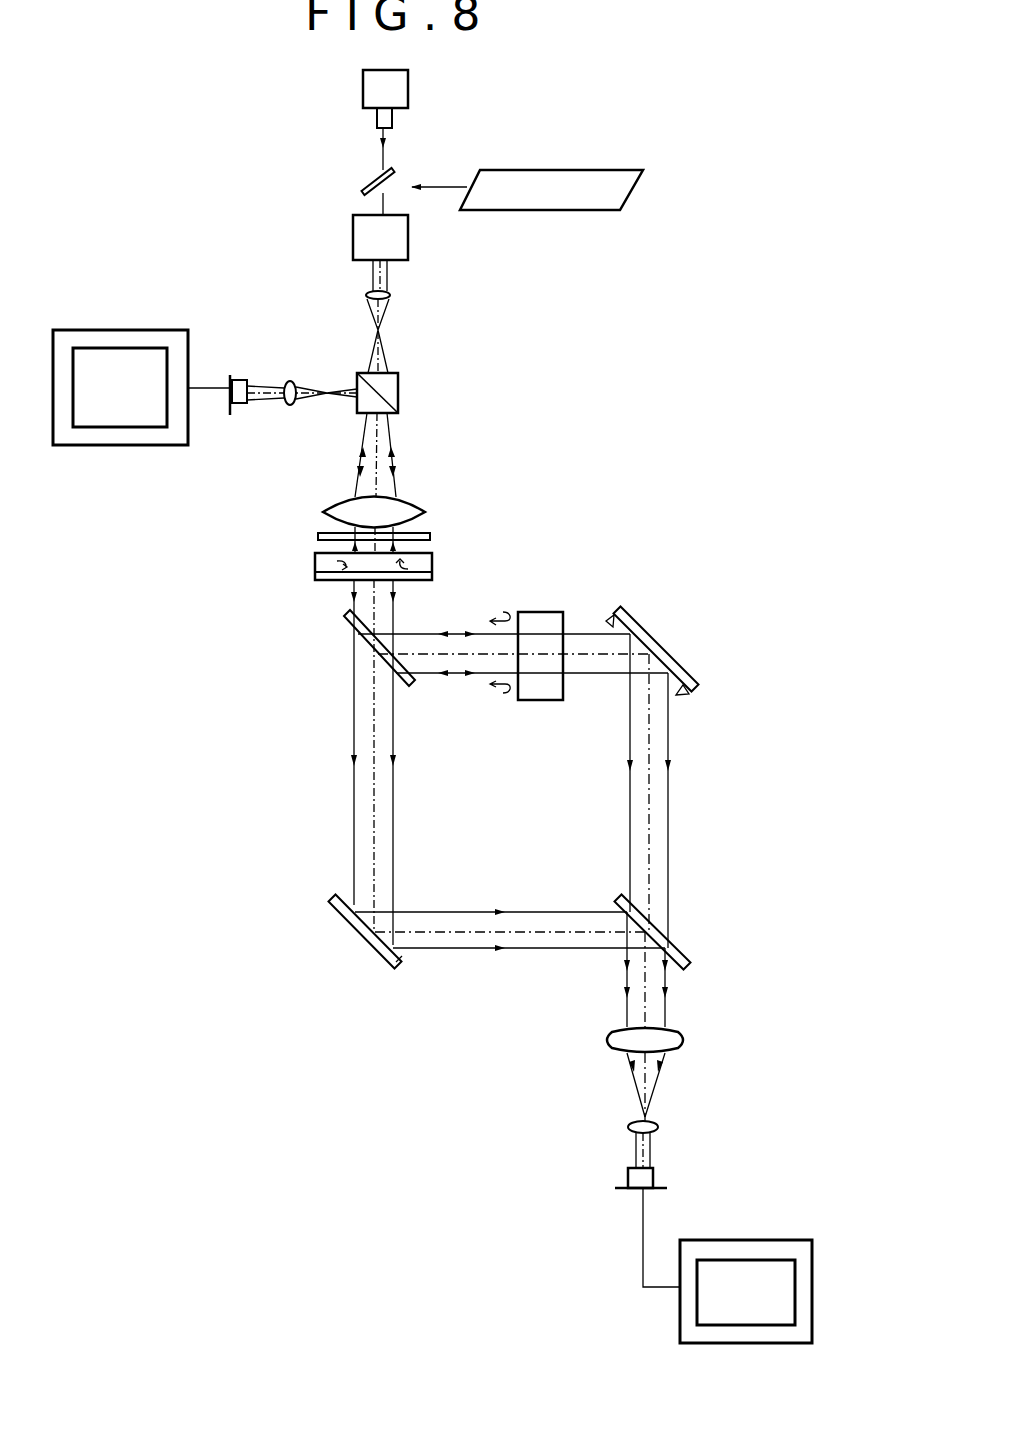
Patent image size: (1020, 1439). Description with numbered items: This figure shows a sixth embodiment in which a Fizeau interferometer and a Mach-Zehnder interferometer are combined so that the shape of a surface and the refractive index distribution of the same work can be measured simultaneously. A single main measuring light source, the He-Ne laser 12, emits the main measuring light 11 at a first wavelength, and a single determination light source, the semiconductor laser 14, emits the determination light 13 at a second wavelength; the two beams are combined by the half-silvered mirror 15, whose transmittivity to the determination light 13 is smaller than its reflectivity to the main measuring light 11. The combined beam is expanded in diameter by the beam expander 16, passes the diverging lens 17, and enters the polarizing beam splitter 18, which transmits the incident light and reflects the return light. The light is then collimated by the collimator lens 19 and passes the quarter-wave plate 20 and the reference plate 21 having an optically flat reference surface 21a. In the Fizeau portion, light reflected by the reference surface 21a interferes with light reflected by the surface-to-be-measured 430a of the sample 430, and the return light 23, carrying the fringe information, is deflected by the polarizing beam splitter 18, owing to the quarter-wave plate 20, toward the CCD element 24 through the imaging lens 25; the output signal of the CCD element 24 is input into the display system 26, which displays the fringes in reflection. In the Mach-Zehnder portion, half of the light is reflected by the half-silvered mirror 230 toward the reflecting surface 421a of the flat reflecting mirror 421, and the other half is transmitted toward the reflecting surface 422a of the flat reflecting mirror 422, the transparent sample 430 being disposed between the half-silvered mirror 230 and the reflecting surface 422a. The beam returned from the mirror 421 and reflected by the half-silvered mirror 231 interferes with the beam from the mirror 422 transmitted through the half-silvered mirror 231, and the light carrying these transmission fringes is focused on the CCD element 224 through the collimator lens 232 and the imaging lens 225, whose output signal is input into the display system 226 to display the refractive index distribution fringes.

The main measuring light 11 is at (440, 185).
The He-Ne laser 12 is at (580, 175).
The determination light 13 is at (382, 157).
The semiconductor laser 14 is at (363, 98).
The half-silvered mirror 15 is at (365, 192).
The beam expander 16 is at (353, 233).
The diverging lens 17 is at (390, 293).
The polarizing beam splitter 18 is at (400, 375).
The collimator lens 19 is at (417, 507).
The quarter-wave plate 20 is at (430, 537).
The reference plate 21 is at (315, 558).
The reference surface 21a is at (323, 582).
The return light 23 is at (340, 393).
The CCD element 24 is at (245, 377).
The imaging lens 25 is at (292, 407).
The display system 26 is at (170, 332).
The half-silvered mirror 230 is at (347, 620).
The half-silvered mirror 231 is at (693, 960).
The collimator lens 232 is at (683, 1040).
The CCD element 224 is at (627, 1175).
The imaging lens 225 is at (627, 1127).
The display system 226 is at (765, 1240).
The flat reflecting mirror 421 is at (385, 957).
The reflecting surface 421a is at (407, 953).
The flat reflecting mirror 422 is at (670, 653).
The reflecting surface 422a is at (668, 690).
The sample 430 is at (553, 612).
The surface-to-be-measured 430a is at (518, 697).